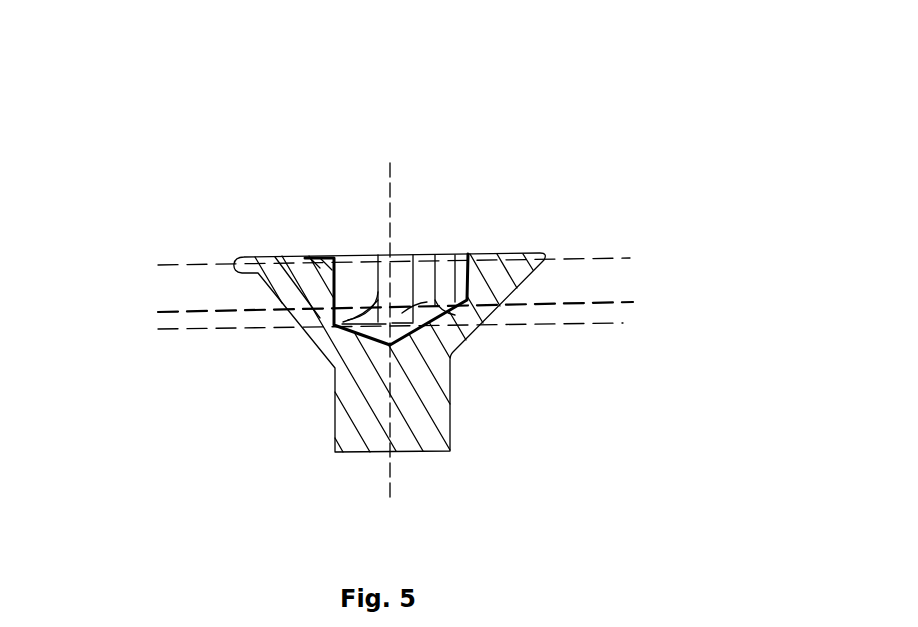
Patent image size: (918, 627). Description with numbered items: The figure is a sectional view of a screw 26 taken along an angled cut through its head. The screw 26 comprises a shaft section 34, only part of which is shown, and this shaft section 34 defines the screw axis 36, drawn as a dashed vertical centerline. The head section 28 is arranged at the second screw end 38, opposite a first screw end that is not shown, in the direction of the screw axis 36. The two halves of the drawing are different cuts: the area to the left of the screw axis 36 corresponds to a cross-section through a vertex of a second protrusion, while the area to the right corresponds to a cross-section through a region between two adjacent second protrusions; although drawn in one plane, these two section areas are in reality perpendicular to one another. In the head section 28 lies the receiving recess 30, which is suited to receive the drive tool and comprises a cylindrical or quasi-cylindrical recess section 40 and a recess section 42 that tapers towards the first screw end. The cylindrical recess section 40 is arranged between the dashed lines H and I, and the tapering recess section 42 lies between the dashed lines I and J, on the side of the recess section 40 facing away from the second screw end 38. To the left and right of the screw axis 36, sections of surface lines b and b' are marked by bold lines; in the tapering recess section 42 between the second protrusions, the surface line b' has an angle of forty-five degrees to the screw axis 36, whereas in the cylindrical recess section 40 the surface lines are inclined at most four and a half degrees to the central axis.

The screw 26 is at (500, 163).
The head section 28 is at (488, 282).
The receiving recess 30 is at (358, 287).
The shaft section 34 is at (428, 425).
The screw axis 36 is at (389, 163).
The second screw end 38 is at (417, 175).
The cylindrical recess section 40 is at (287, 283).
The tapering recess section 42 is at (320, 318).
The dashed line H is at (620, 258).
The dashed line I is at (620, 300).
The dashed line J is at (613, 326).
The surface line b is at (283, 408).
The surface line b' is at (476, 359).